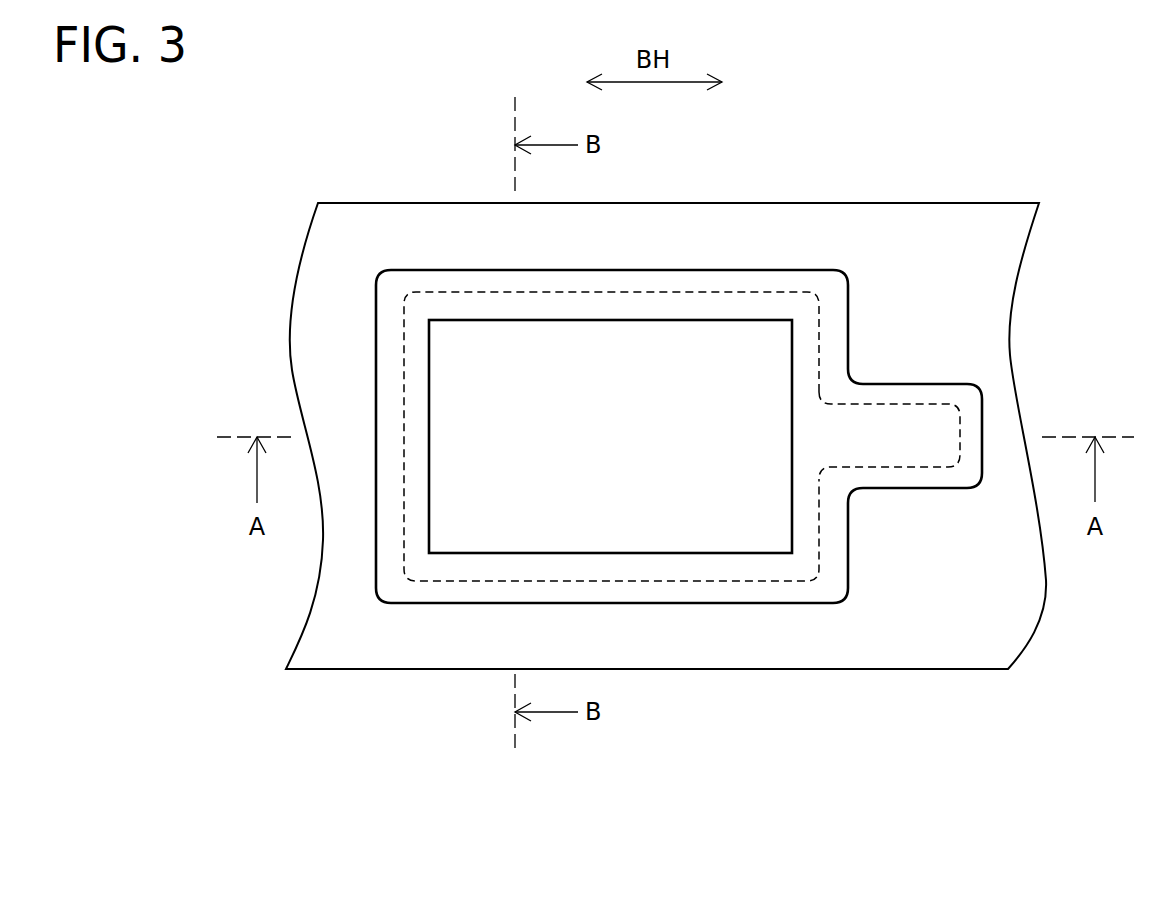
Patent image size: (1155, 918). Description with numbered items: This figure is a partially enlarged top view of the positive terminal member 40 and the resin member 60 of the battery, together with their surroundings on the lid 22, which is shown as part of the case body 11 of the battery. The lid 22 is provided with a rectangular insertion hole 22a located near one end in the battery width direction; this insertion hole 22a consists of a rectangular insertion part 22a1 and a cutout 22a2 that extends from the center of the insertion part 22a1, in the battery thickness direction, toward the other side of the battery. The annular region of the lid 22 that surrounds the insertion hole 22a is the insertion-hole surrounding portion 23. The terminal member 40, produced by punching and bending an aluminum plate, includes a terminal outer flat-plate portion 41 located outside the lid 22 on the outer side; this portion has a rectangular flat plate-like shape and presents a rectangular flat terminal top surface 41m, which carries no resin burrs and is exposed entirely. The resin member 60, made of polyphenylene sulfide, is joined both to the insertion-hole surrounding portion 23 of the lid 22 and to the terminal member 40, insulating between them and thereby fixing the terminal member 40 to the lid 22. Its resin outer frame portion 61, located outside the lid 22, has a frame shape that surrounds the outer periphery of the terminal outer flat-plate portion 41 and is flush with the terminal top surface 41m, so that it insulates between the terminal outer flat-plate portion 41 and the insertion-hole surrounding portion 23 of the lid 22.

The substrate 11 is at (408, 233).
The lid 22 is at (470, 233).
The insertion hole 22a is at (703, 820).
The insertion part 22a1 is at (705, 582).
The cutout 22a2 is at (897, 457).
The insertion-hole surrounding portion 23 is at (635, 593).
The terminal member 40 is at (755, 403).
The terminal outer flat-plate portion 41 is at (720, 355).
The terminal top surface 41m is at (617, 338).
The resin member 60 is at (390, 590).
The resin outer frame portion 61 is at (442, 588).